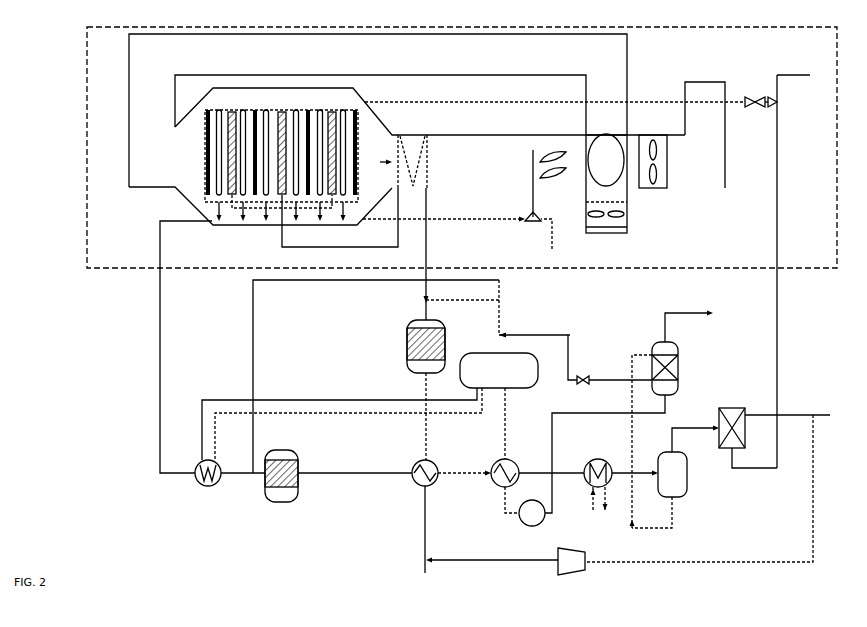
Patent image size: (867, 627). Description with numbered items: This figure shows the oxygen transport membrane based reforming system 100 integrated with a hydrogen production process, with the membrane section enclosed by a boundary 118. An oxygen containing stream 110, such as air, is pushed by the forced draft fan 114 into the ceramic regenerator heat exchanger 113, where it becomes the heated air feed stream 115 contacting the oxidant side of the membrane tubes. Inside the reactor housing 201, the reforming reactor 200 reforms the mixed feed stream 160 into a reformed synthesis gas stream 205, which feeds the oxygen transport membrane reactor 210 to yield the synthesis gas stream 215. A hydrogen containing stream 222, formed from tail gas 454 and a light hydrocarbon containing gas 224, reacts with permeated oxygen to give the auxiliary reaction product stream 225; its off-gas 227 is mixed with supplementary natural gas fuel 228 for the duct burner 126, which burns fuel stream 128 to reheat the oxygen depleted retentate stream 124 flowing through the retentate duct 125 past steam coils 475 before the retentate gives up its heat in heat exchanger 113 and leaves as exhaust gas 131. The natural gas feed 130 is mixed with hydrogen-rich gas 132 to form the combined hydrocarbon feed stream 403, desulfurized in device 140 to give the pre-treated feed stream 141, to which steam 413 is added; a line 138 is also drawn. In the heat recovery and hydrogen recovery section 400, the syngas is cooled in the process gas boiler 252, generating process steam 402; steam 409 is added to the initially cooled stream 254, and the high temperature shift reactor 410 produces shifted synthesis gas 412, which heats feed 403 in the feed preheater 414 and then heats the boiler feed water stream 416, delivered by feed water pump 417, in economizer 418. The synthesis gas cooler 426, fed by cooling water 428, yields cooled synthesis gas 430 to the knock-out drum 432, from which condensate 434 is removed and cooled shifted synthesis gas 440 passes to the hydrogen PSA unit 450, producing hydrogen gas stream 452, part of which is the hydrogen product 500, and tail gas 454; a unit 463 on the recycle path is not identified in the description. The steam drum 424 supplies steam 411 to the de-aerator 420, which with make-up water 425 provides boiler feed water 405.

The oxygen transport membrane based reforming system 100 is at (87, 122).
The boiler system boundary 118 is at (462, 141).
The heated air feed stream 115 is at (193, 153).
The exhaust gas 131 is at (706, 82).
The light hydrocarbon containing gas 224 is at (789, 269).
The reformed synthesis gas stream 205 is at (228, 110).
The oxygen transport membrane reactor 210 is at (270, 110).
The reforming reactor 200 is at (328, 110).
The hydrogen containing stream 222 is at (480, 102).
The steam coils 475 is at (413, 135).
The auxiliary reaction product stream 225 is at (205, 140).
The oxygen depleted retentate stream 124 is at (374, 162).
The duct burner 126 is at (533, 150).
The heat exchanger 113 is at (606, 160).
The reactor housing 201 is at (407, 150).
The retentate duct 125 is at (473, 188).
The fuel stream 128 is at (533, 200).
The forced draft fan 114 is at (626, 214).
The mixed feed stream 160 is at (307, 247).
The off-gas 227 is at (498, 219).
The supplementary natural gas fuel 228 is at (552, 241).
The oxygen containing stream 110 is at (606, 233).
The synthesis gas stream 215 is at (160, 280).
The pre-treated natural gas and hydrogen feed stream 141 is at (426, 307).
The steam 413 is at (460, 300).
The process steam 402 is at (499, 313).
The steam 411 is at (575, 357).
The steam 409 is at (253, 340).
The sulfur removal device 140 is at (407, 360).
The steam drum 424 is at (370, 406).
The de-aerator 420 is at (678, 368).
The line 138 is at (426, 387).
The boiler feed water 405 is at (558, 413).
The cooled shifted synthesis gas 440 is at (698, 428).
The hydrogen pressure swing adsorption unit 450 is at (732, 408).
The hydrogen gas stream 452 is at (798, 415).
The hydrogen product 500 is at (842, 415).
The process gas boiler 252 is at (182, 473).
The initially cooled synthesis gas product stream 254 is at (238, 473).
The high temperature shift reactor 410 is at (282, 450).
The shifted synthesis gas stream 412 is at (325, 473).
The feed preheater 414 is at (416, 464).
The boiler feed water stream 416 is at (466, 461).
The synthesis gas cooler 426 is at (598, 459).
The cooled synthesis gas 430 is at (645, 473).
The knock-out drum 432 is at (672, 474).
The combined hydrocarbon feed stream 403 is at (425, 540).
The economizer 418 is at (505, 500).
The cooling water 428 is at (594, 508).
The condensate stream 434 is at (672, 515).
The hydrogen-rich gas 132 is at (465, 560).
The feed water pump 417 is at (532, 526).
The make-up water stream 425 is at (632, 528).
The tail gas 454 is at (751, 468).
The turbine 463 is at (571, 561).
The hydrocarbon containing feed stream 130 is at (425, 580).
The heat recovery and hydrogen recovery section 400 is at (224, 508).